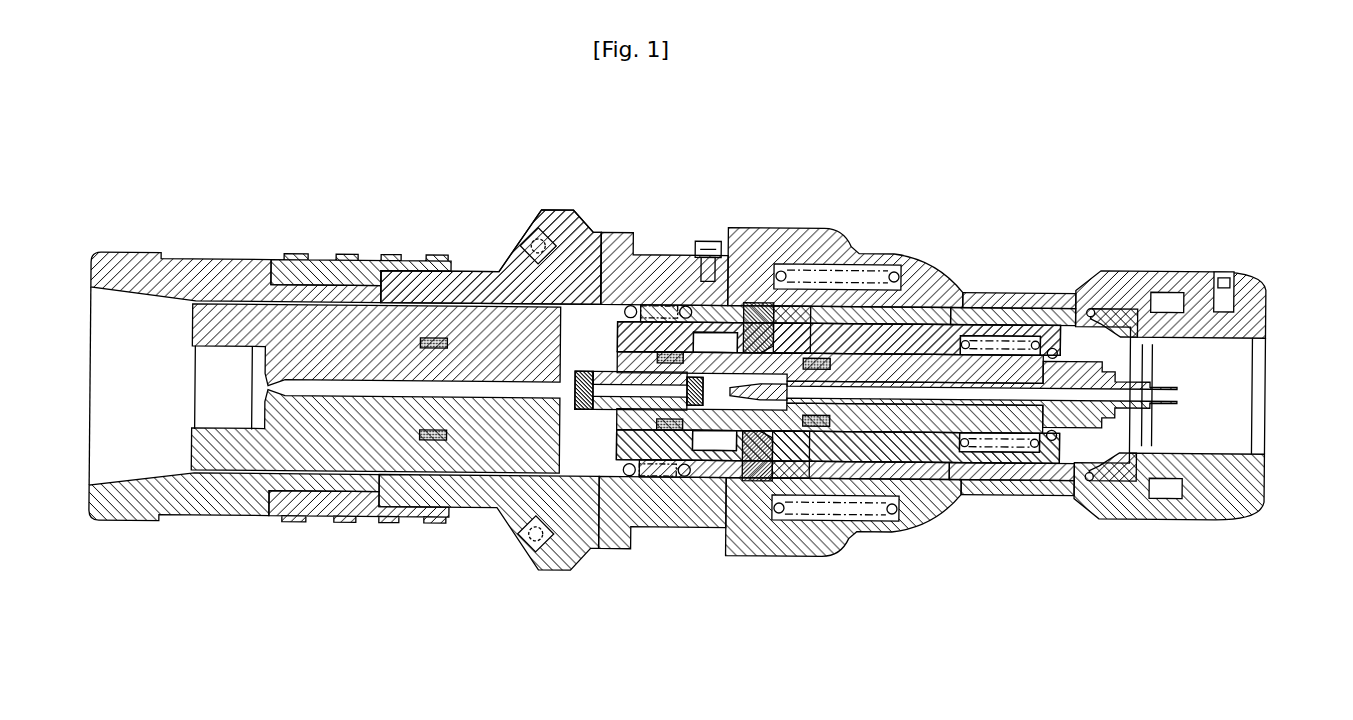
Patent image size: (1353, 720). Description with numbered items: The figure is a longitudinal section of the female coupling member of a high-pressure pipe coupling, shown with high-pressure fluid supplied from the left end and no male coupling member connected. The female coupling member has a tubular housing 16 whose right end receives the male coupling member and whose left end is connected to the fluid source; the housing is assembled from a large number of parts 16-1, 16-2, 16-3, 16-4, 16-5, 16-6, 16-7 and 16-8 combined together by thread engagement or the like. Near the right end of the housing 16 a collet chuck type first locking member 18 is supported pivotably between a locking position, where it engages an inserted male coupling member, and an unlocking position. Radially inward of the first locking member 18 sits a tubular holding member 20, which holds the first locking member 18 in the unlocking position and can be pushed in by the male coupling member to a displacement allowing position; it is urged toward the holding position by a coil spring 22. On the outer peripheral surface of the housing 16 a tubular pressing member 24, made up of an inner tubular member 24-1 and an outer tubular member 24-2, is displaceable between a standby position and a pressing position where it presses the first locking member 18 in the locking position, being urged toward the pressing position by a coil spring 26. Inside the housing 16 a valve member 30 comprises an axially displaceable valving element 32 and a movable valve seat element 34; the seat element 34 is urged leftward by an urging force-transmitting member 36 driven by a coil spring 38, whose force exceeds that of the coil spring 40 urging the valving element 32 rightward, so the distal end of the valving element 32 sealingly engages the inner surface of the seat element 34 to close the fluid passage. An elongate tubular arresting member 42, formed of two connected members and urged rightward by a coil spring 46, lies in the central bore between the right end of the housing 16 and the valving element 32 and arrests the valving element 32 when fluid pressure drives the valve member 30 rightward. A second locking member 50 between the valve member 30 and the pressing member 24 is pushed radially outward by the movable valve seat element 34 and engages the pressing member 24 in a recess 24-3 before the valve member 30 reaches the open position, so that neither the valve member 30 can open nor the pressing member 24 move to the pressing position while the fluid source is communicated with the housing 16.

The tubular housing 16 is at (486, 240).
The housing part 16-1 is at (180, 250).
The housing part 16-2 is at (225, 300).
The housing part 16-3 is at (276, 258).
The housing part 16-4 is at (370, 262).
The housing part 16-5 is at (450, 270).
The housing part 16-6 is at (668, 255).
The housing part 16-7 is at (1062, 250).
The housing part 16-8 is at (1197, 250).
The first locking member 18 is at (1140, 250).
The holding member 20 is at (1147, 357).
The coil spring 22 is at (935, 490).
The pressing member 24 is at (942, 145).
The inner tubular member 24-1 is at (997, 250).
The outer tubular member 24-2 is at (938, 250).
The recess 24-3 is at (755, 298).
The coil spring 26 is at (843, 242).
The valve member 30 is at (622, 642).
The valving element 32 is at (598, 410).
The movable valve seat element 34 is at (630, 410).
The urging force-transmitting member 36 is at (632, 300).
The coil spring 38 is at (650, 303).
The coil spring 40 is at (575, 397).
The arresting member 42 is at (975, 415).
The coil spring 46 is at (855, 500).
The second locking member 50 is at (800, 303).